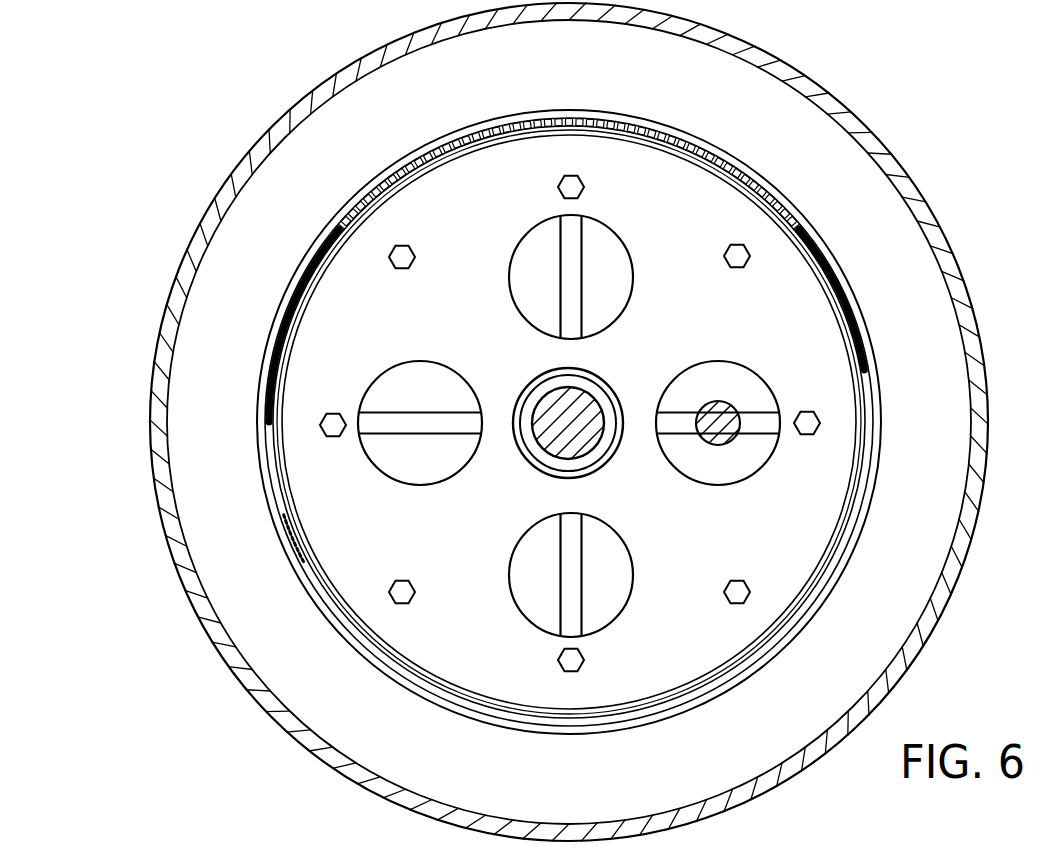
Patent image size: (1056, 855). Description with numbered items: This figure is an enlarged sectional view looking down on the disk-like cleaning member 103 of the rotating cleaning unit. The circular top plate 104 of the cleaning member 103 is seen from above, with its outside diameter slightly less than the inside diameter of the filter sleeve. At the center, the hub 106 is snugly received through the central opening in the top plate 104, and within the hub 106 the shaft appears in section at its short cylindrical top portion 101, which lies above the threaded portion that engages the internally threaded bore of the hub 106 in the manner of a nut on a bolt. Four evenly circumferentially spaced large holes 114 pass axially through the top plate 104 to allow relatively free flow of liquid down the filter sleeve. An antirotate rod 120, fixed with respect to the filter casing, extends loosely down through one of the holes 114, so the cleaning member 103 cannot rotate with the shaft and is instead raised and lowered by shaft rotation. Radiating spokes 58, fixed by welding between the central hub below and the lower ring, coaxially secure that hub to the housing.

The cleaning member 103 is at (290, 197).
The top plate 104 is at (430, 197).
The radiating spokes 58 is at (577, 253).
The top portion of shaft 101 is at (548, 405).
The hub 106 is at (600, 393).
The large holes 114 is at (368, 455).
The antirotate rod 120 is at (726, 440).